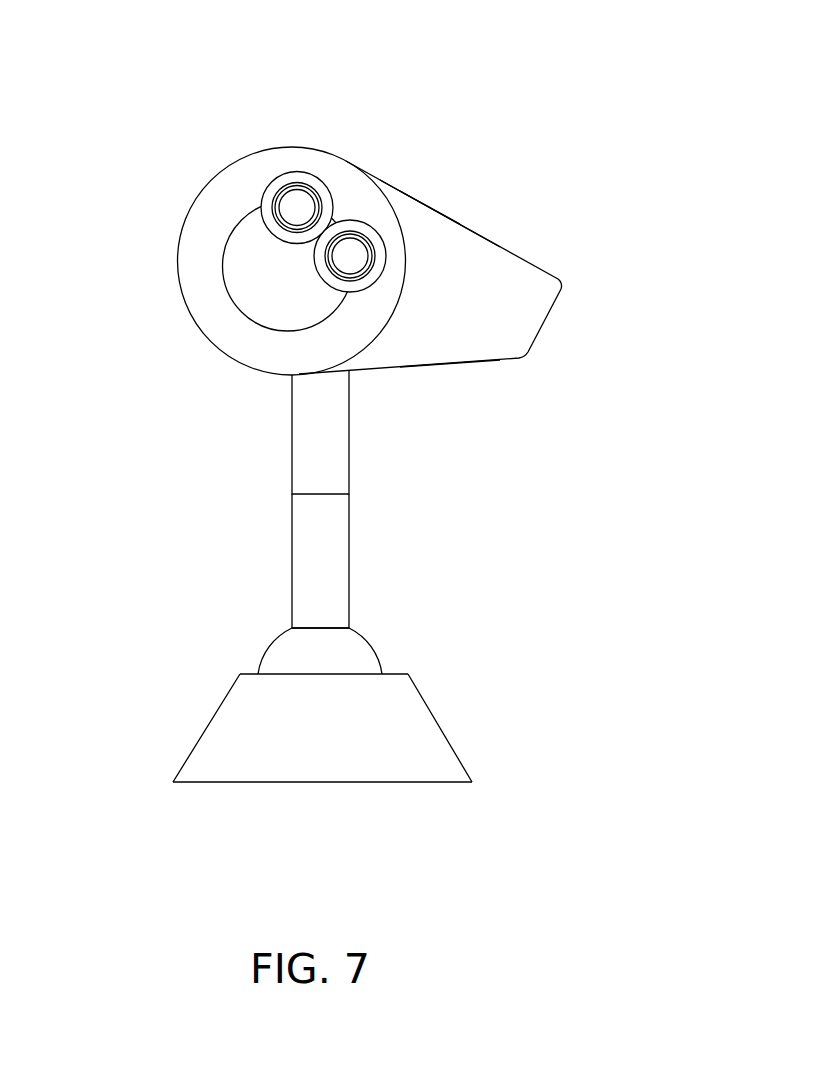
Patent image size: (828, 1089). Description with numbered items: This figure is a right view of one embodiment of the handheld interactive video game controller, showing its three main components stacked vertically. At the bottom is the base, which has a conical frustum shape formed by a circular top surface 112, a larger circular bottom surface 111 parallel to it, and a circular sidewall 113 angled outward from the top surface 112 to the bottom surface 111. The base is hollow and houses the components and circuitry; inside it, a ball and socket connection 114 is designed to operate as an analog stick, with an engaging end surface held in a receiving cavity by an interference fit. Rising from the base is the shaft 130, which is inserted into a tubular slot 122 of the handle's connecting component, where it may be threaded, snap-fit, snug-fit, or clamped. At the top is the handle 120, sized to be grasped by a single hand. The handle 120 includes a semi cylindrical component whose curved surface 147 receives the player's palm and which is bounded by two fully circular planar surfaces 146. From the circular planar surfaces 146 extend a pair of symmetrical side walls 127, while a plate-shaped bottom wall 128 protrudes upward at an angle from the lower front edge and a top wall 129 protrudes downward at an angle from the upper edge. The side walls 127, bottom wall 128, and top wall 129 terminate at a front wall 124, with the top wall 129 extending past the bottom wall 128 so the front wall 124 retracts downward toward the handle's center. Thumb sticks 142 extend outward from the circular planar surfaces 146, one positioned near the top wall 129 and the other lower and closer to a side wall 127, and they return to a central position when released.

The bottom surface 111 is at (185, 785).
The top surface 112 is at (324, 726).
The circular sidewall 113 is at (443, 723).
The ball and socket connection 114 is at (377, 643).
The handle 120 is at (370, 257).
The tubular slot 122 is at (288, 436).
The front wall 124 is at (558, 327).
The side walls 127 is at (487, 260).
The bottom wall 128 is at (472, 368).
The top wall 129 is at (440, 205).
The shaft 130 is at (277, 525).
The thumb sticks 142 is at (287, 165).
The circular planar surfaces 146 is at (228, 293).
The curved surface 147 is at (173, 230).